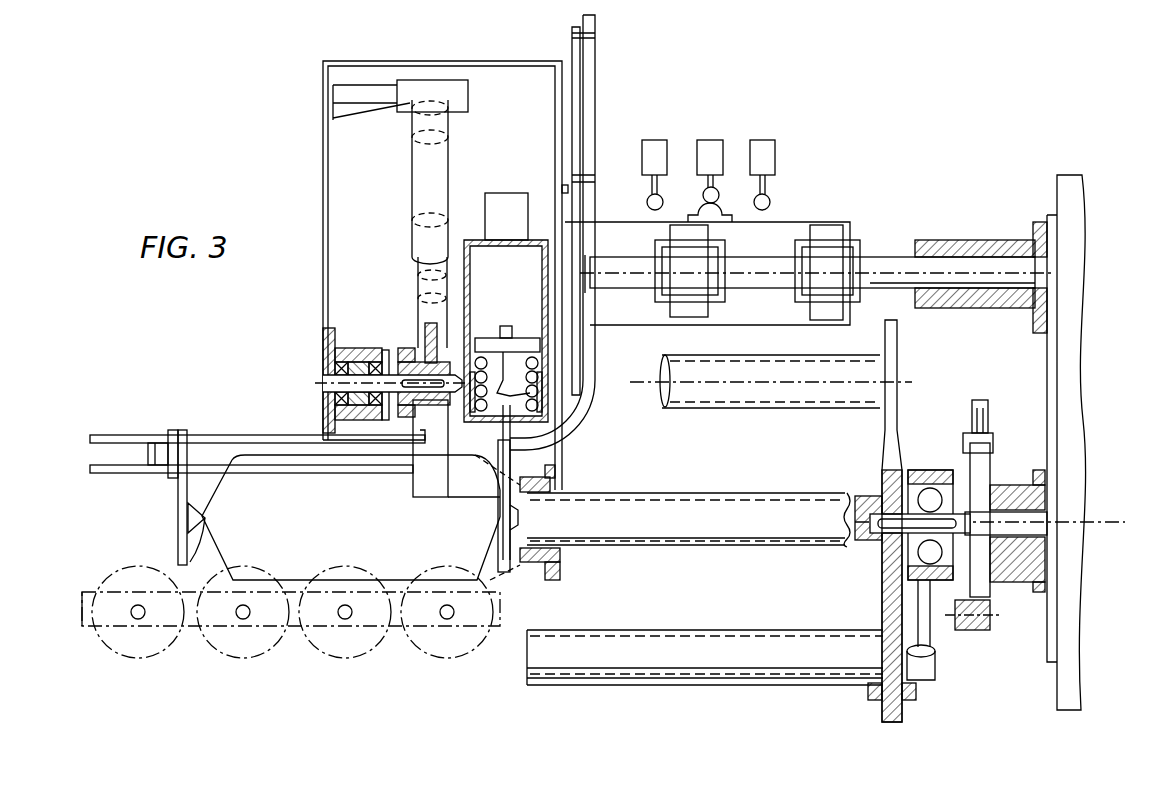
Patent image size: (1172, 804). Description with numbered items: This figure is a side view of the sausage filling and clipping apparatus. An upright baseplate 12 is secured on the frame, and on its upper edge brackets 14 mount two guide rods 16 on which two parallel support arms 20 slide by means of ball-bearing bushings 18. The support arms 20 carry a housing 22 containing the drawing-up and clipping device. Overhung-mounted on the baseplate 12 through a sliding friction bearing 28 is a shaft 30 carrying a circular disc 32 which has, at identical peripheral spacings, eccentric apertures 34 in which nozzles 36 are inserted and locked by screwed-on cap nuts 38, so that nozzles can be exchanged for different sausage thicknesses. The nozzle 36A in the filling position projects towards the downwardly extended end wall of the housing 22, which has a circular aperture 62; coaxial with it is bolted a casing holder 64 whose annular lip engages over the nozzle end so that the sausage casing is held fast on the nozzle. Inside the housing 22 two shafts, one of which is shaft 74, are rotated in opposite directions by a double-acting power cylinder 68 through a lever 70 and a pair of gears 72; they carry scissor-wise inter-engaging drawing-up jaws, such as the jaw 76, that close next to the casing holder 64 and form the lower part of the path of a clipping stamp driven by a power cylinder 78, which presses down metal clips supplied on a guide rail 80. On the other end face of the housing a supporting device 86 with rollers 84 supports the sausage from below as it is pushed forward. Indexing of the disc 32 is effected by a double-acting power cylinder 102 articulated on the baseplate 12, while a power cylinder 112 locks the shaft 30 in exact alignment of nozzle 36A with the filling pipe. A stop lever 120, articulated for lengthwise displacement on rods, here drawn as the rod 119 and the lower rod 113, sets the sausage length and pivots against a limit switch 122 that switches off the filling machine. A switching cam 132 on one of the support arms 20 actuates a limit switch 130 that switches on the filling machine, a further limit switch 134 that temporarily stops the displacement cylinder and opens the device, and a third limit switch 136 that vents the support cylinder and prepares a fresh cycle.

The baseplate 12 is at (1047, 665).
The bracket 14 is at (960, 242).
The guide rod 16 is at (893, 258).
The ball-bearing bushing 18 is at (670, 318).
The support arm 20 is at (750, 314).
The housing 22 is at (480, 61).
The sliding friction bearing 28 is at (1010, 582).
The shaft 30 is at (1045, 520).
The circular disc 32 is at (892, 722).
The eccentric aperture 34 is at (910, 686).
The nozzle 36 is at (698, 403).
The nozzle in filling position 36A is at (680, 546).
The cap nut 38 is at (876, 696).
The circular aperture 62 is at (552, 556).
The casing holder 64 is at (525, 572).
The double-acting power cylinder 68 is at (415, 177).
The lever 70 is at (427, 325).
The pair of gears 72 is at (412, 350).
The shaft 74 is at (335, 390).
The drawing-up jaw 76 is at (500, 560).
The power cylinder 78 is at (521, 294).
The guide rail 80 is at (595, 58).
The roller 84 is at (152, 648).
The supporting device 86 is at (85, 628).
The double-acting power cylinder 102 is at (935, 666).
The power cylinder 112 is at (985, 470).
The lower bar 113 is at (98, 473).
The rod 119 is at (215, 443).
The stop lever 120 is at (178, 540).
The limit switch 122 is at (160, 445).
The limit switch 130 is at (770, 165).
The switching cam 132 is at (705, 215).
The limit switch 134 is at (723, 148).
The limit switch 136 is at (655, 148).